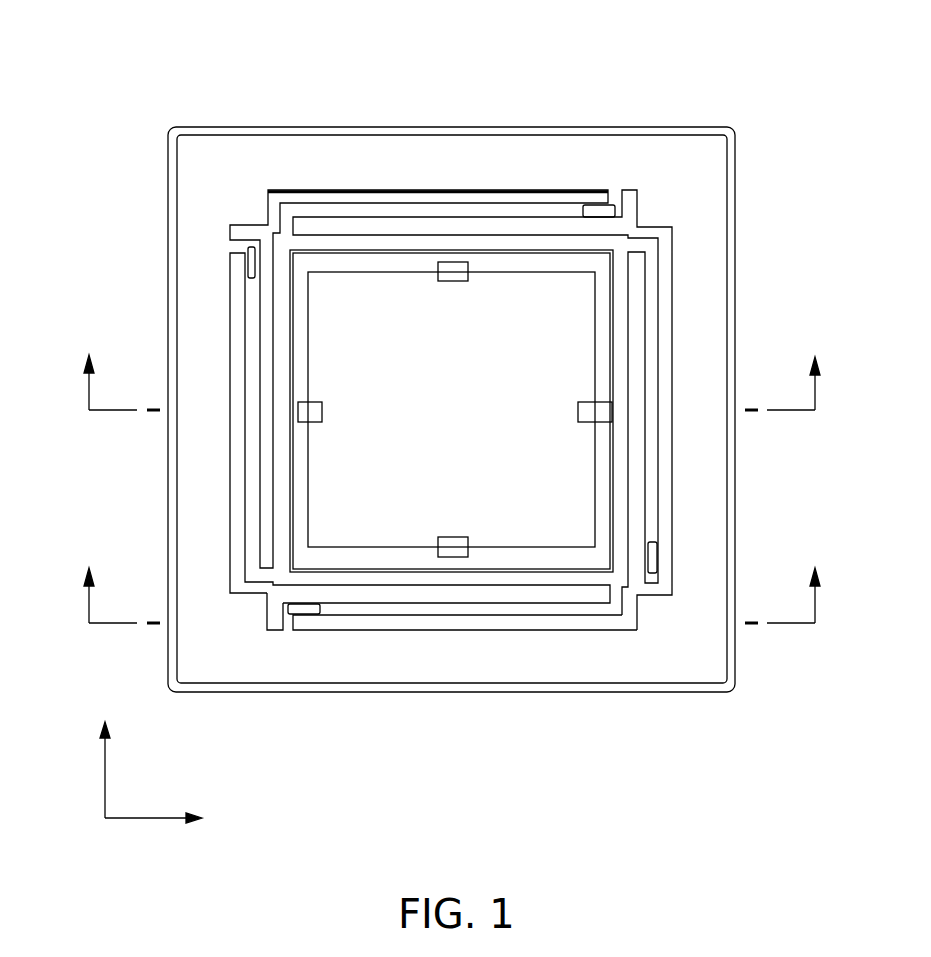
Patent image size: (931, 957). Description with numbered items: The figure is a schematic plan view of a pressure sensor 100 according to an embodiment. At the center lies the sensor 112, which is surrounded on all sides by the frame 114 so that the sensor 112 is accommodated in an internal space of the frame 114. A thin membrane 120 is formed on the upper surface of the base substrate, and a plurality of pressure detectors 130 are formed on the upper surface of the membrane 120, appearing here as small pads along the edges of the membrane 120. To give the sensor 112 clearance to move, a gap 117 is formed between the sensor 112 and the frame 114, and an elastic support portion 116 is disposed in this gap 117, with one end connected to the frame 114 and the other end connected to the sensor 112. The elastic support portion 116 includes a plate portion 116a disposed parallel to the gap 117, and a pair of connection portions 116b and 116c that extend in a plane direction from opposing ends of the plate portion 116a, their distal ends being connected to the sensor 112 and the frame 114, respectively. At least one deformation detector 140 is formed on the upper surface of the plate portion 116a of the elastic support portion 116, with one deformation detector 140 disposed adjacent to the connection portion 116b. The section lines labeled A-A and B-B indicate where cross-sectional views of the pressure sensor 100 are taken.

The pressure sensor 100 is at (475, 27).
The sensor 112 is at (645, 468).
The frame 114 is at (710, 508).
The elastic support portion 116 is at (635, 768).
The plate portion 116a is at (463, 610).
The connection portion 116b is at (290, 620).
The connection portion 116c is at (617, 593).
The gap 117 is at (382, 240).
The membrane 120 is at (585, 350).
The pressure detector 130 is at (452, 262).
The deformation detector 140 is at (597, 205).